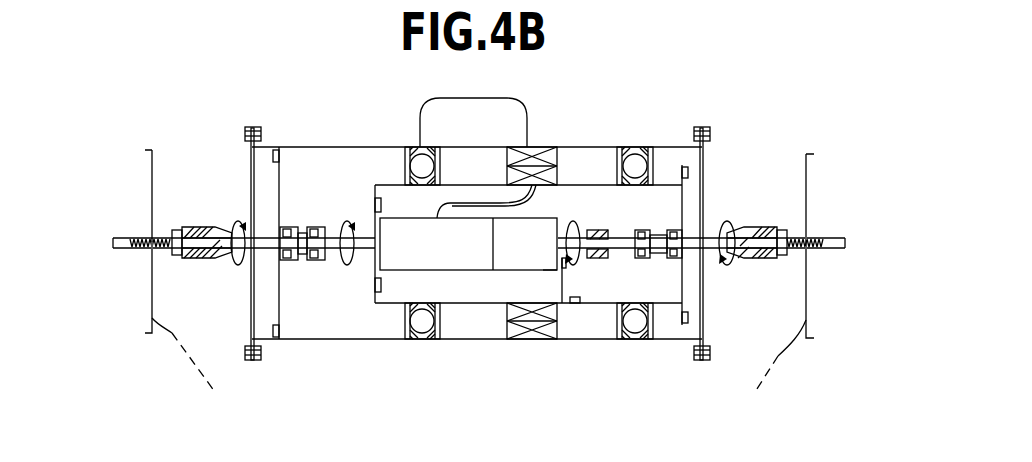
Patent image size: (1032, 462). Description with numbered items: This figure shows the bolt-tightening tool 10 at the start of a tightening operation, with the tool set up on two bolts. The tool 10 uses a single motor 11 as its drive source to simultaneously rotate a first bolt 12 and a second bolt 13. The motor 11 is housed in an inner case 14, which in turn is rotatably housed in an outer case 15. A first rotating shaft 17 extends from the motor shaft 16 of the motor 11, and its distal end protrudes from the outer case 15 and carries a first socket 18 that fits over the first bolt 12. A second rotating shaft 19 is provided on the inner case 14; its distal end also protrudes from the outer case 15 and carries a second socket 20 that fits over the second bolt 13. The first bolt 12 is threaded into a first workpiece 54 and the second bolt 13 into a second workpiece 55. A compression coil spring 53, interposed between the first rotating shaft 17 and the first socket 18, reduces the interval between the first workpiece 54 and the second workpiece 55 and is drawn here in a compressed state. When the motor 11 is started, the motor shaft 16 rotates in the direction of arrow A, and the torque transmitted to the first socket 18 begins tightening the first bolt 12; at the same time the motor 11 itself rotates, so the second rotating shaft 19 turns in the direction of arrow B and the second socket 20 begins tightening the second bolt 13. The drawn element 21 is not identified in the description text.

The bolt-tightening tool 10 is at (746, 70).
The motor 11 is at (472, 272).
The first bolt 12 is at (795, 237).
The second bolt 13 is at (157, 237).
The inner case 14 is at (486, 312).
The outer case 15 is at (569, 142).
The motor shaft 16 is at (583, 234).
The first rotating shaft 17 is at (694, 230).
The first socket 18 is at (770, 228).
The second rotating shaft 19 is at (260, 222).
The second socket 20 is at (192, 228).
The rotor magnet 21 is at (543, 272).
The compression coil spring 53 is at (724, 265).
The first workpiece 54 is at (763, 372).
The second workpiece 55 is at (193, 371).
The arrow A is at (570, 222).
The arrow B is at (341, 228).